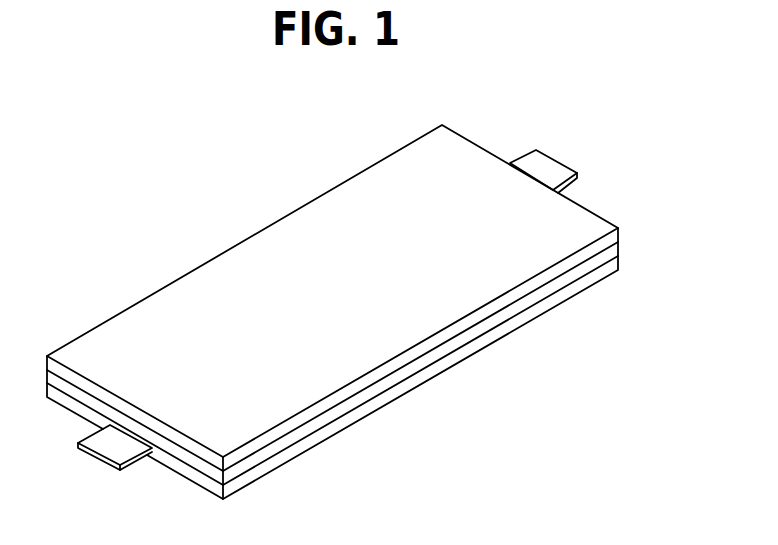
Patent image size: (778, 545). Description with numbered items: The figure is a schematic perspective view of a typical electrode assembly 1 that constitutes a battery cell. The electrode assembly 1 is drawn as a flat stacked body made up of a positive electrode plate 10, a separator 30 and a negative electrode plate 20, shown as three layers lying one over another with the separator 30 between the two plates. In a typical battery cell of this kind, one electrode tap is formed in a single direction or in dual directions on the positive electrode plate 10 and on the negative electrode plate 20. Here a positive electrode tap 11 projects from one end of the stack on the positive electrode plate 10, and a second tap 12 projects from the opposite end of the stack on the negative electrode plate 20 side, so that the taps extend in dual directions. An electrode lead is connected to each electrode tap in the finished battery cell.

The electrode assembly 1 is at (230, 206).
The positive electrode plate 10 is at (468, 323).
The positive electrode tap 11 is at (542, 172).
The second electrode tab 12 is at (115, 447).
The negative electrode plate 20 is at (395, 390).
The separator 30 is at (432, 357).